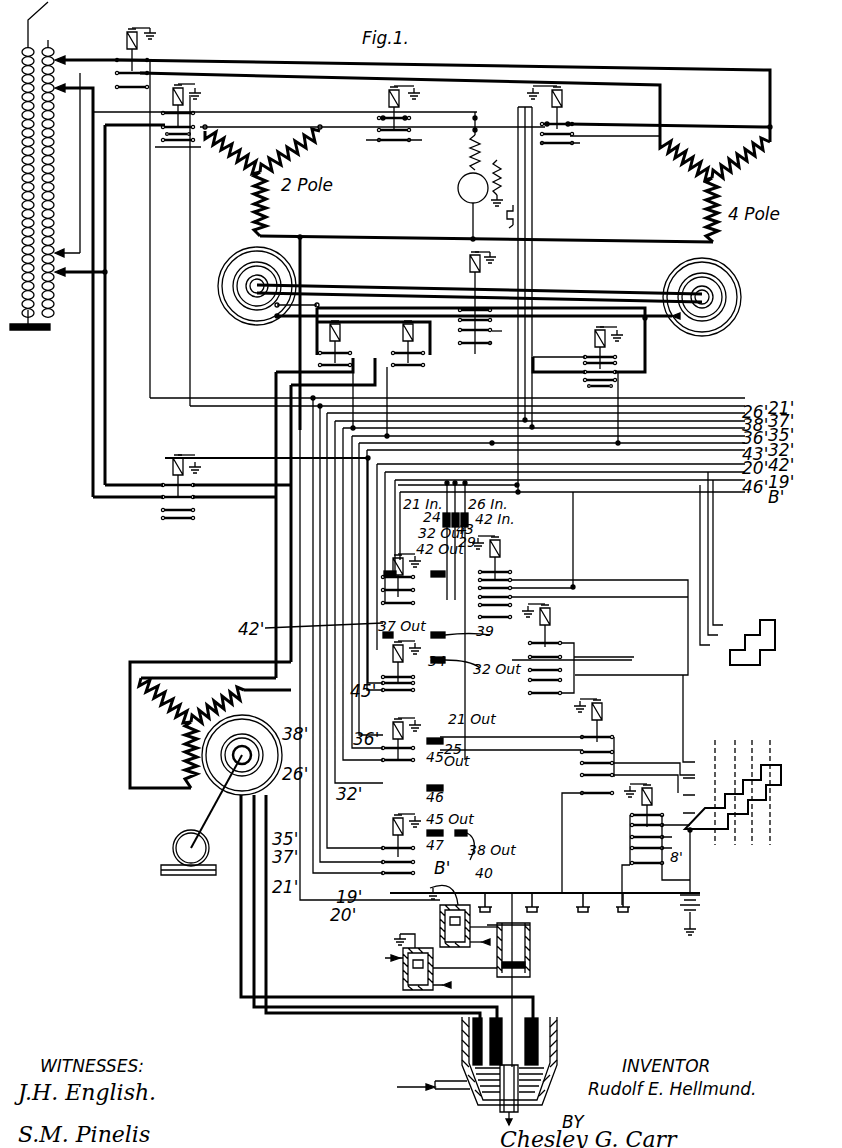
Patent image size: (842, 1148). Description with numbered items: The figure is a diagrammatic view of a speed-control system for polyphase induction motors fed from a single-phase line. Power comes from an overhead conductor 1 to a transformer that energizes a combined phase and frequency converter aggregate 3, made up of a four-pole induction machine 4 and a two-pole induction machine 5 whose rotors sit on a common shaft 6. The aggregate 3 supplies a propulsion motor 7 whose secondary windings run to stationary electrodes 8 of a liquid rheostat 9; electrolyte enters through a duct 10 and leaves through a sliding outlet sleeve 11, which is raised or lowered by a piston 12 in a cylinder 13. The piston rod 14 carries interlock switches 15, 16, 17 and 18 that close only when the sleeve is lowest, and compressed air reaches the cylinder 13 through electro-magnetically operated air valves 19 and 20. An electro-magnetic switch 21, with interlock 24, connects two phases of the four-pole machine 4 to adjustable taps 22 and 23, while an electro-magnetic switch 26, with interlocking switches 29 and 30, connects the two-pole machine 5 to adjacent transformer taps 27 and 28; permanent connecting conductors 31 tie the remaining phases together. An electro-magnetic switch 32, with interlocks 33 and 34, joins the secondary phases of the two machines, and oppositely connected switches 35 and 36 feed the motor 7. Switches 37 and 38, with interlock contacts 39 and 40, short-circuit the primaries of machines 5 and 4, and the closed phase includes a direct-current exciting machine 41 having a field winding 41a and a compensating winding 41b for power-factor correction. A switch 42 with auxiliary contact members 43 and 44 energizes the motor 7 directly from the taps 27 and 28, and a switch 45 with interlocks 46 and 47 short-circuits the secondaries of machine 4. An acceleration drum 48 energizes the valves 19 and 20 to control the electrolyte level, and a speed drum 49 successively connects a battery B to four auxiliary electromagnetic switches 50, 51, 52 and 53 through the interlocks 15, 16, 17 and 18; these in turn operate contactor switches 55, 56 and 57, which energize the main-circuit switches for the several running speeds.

The overhead conductor 1 is at (32, 166).
The combined phase and frequency converter aggregate 3 is at (479, 235).
The four-pole induction machine 4 is at (707, 292).
The two-pole induction machine 5 is at (251, 279).
The common shaft 6 is at (547, 288).
The propulsion motor 7 is at (347, 859).
The stationary electrodes 8 is at (538, 1032).
The liquid rheostat 9 is at (499, 1061).
The duct 10 is at (433, 1077).
The sliding outlet sleeve 11 is at (497, 1107).
The piston 12 is at (530, 952).
The cylinder 13 is at (530, 968).
The piston rod 14 is at (500, 893).
The interlock switch 15 is at (565, 915).
The interlock switch 16 is at (607, 915).
The interlock switch 17 is at (573, 915).
The interlock switch 18 is at (539, 915).
The electro-magnetically operated air valve 19 is at (451, 913).
The electro-magnetically operated air valve 20 is at (435, 962).
The electro-magnetic switch 21 is at (123, 209).
The adjustable tap 22 is at (87, 50).
The adjustable tap 23 is at (65, 244).
The auxiliary contact member 24 is at (78, 74).
The electro-magnetic switch 26 is at (191, 245).
The adjustable transformer tap 27 is at (73, 290).
The adjustable transformer tap 28 is at (78, 282).
The interlocking switch 29 is at (165, 137).
The interlocking switch 30 is at (177, 159).
The permanent connecting conductors 31 is at (310, 258).
The electro-magnetic switch 32 is at (486, 303).
The auxiliary interlocking contact member 33 is at (506, 334).
The auxiliary interlocking contact member 34 is at (477, 358).
The electro-magnetic switch 35 is at (344, 344).
The electro-magnetic switch 36 is at (399, 344).
The electro-magnetic switch 37 is at (381, 114).
The electro-magnetic switch 38 is at (556, 290).
The interlock contact 39 is at (382, 143).
The interlock contact 40 is at (560, 156).
The direct-current exciting machine 41 is at (473, 207).
The direct-current field winding 41a is at (507, 187).
The compensating or neutralizing winding 41b is at (468, 152).
The electro-magnetic switch 42 is at (192, 478).
The auxiliary contact members 43 is at (160, 507).
The auxiliary contact members 44 is at (162, 521).
The electro-magnetic switch 45 is at (589, 381).
The auxiliary interlocking switch 46 is at (580, 386).
The auxiliary interlocking switch 47 is at (612, 388).
The acceleration drum 48 is at (738, 592).
The speed drum 49 is at (733, 850).
The auxiliary electromagnetic switch 50 is at (656, 843).
The auxiliary electromagnetic switch 51 is at (567, 787).
The auxiliary electromagnetic switch 52 is at (573, 649).
The auxiliary electromagnetic switch 53 is at (580, 605).
The contactor switch 55 is at (401, 844).
The contactor switch 56 is at (401, 730).
The contactor switch 57 is at (401, 666).
The battery B is at (703, 907).